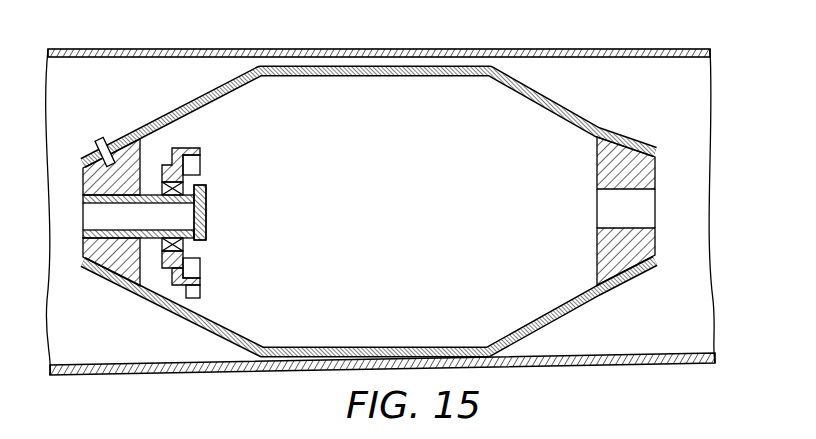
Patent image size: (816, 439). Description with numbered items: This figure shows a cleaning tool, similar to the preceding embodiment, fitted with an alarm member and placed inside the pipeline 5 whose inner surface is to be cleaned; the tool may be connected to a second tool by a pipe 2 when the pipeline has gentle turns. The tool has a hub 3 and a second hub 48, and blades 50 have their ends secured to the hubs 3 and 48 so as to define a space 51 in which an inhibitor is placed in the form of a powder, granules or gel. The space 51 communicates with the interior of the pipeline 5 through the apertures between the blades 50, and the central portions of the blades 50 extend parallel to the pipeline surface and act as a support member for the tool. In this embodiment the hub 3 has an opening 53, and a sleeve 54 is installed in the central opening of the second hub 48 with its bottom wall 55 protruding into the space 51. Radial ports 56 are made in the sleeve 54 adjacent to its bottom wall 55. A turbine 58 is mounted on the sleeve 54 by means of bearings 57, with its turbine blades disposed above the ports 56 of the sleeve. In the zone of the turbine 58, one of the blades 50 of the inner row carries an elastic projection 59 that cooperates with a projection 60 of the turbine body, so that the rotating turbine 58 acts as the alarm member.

The pipe 2 is at (102, 138).
The hub 3 is at (606, 130).
The pipeline 5 is at (652, 364).
The second hub 48 is at (100, 258).
The blades 50 is at (223, 74).
The space 51 is at (339, 92).
The opening 53 is at (641, 207).
The sleeve 54 is at (102, 232).
The bottom wall 55 is at (207, 186).
The radial ports 56 is at (207, 241).
The bearings 57 is at (160, 264).
The turbine 58 is at (177, 286).
The elastic projection 59 is at (189, 148).
The projection 60 is at (201, 291).